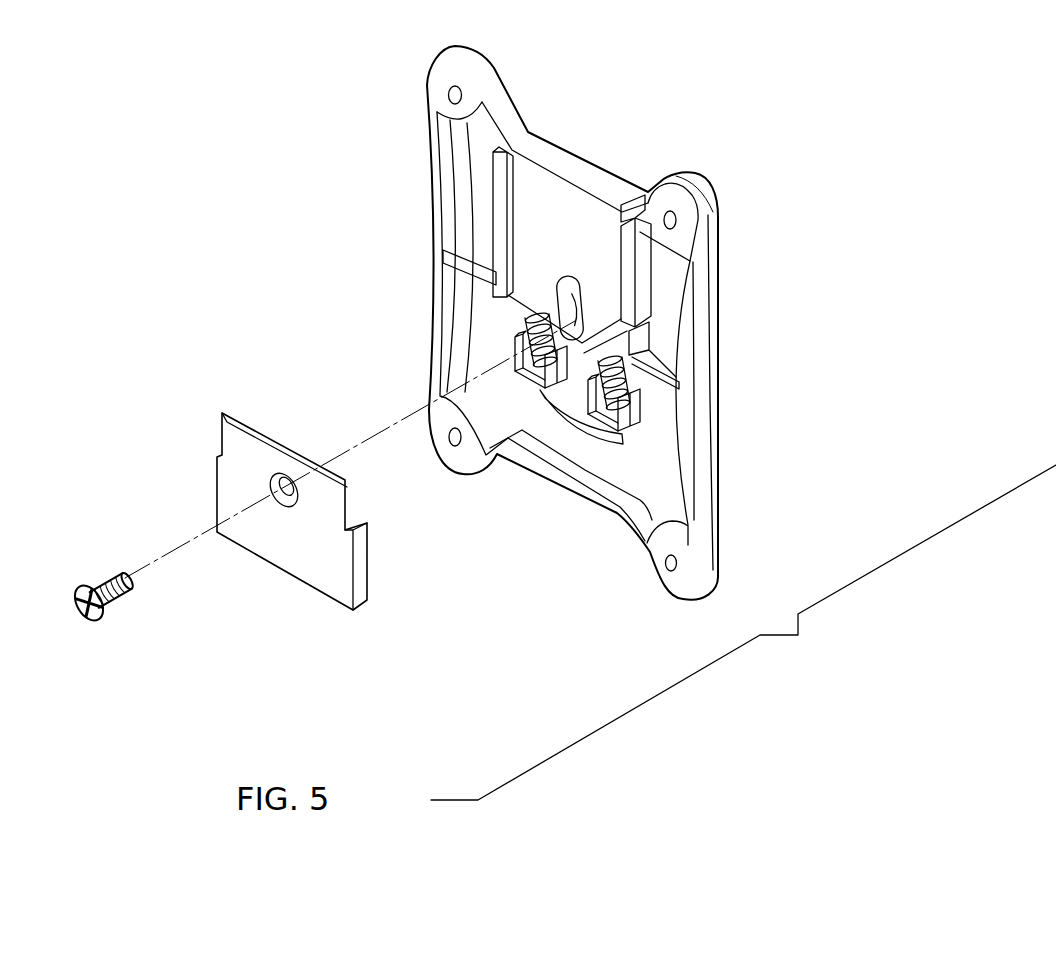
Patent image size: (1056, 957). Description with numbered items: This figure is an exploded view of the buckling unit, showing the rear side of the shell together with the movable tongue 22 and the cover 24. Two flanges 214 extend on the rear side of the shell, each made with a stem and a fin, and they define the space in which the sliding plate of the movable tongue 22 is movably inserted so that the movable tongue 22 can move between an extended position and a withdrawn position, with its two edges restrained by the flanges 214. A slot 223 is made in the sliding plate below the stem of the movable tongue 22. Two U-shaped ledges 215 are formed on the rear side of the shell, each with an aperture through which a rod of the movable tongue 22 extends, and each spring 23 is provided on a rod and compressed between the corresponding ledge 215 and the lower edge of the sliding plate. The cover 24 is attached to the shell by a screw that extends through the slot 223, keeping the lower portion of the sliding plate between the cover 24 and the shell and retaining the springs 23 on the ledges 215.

The movable tongue 22 is at (548, 198).
The flange 214 is at (498, 177).
The slot 223 is at (568, 295).
The spring 23 is at (640, 408).
The ledge 215 is at (640, 428).
The cover 24 is at (303, 557).